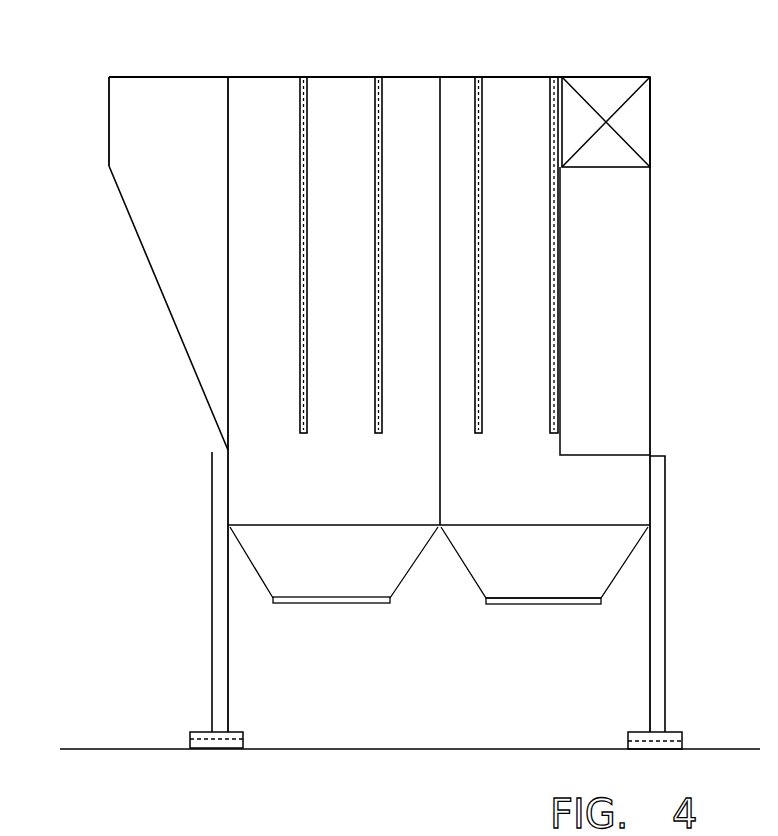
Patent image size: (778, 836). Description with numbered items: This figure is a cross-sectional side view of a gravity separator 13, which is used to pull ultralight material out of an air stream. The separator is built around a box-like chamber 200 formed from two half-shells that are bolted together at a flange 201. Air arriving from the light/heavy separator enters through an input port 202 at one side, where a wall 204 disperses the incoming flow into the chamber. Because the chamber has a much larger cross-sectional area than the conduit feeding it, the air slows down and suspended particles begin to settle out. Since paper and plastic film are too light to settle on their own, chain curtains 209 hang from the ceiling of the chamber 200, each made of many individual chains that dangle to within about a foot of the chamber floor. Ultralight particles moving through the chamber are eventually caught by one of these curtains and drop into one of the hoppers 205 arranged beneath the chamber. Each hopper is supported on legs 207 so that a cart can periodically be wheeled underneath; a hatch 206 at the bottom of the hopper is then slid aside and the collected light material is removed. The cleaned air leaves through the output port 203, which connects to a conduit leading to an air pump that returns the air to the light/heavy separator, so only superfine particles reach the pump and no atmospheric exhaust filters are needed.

The gravity separator 13 is at (148, 336).
The box-like chamber 200 is at (521, 78).
The flange 201 is at (438, 105).
The input port 202 is at (110, 102).
The output port 203 is at (643, 142).
The wall 204 is at (144, 252).
The hopper 205 is at (333, 580).
The hatch 206 is at (390, 600).
The legs 207 is at (212, 662).
The chain curtains 209 is at (372, 115).